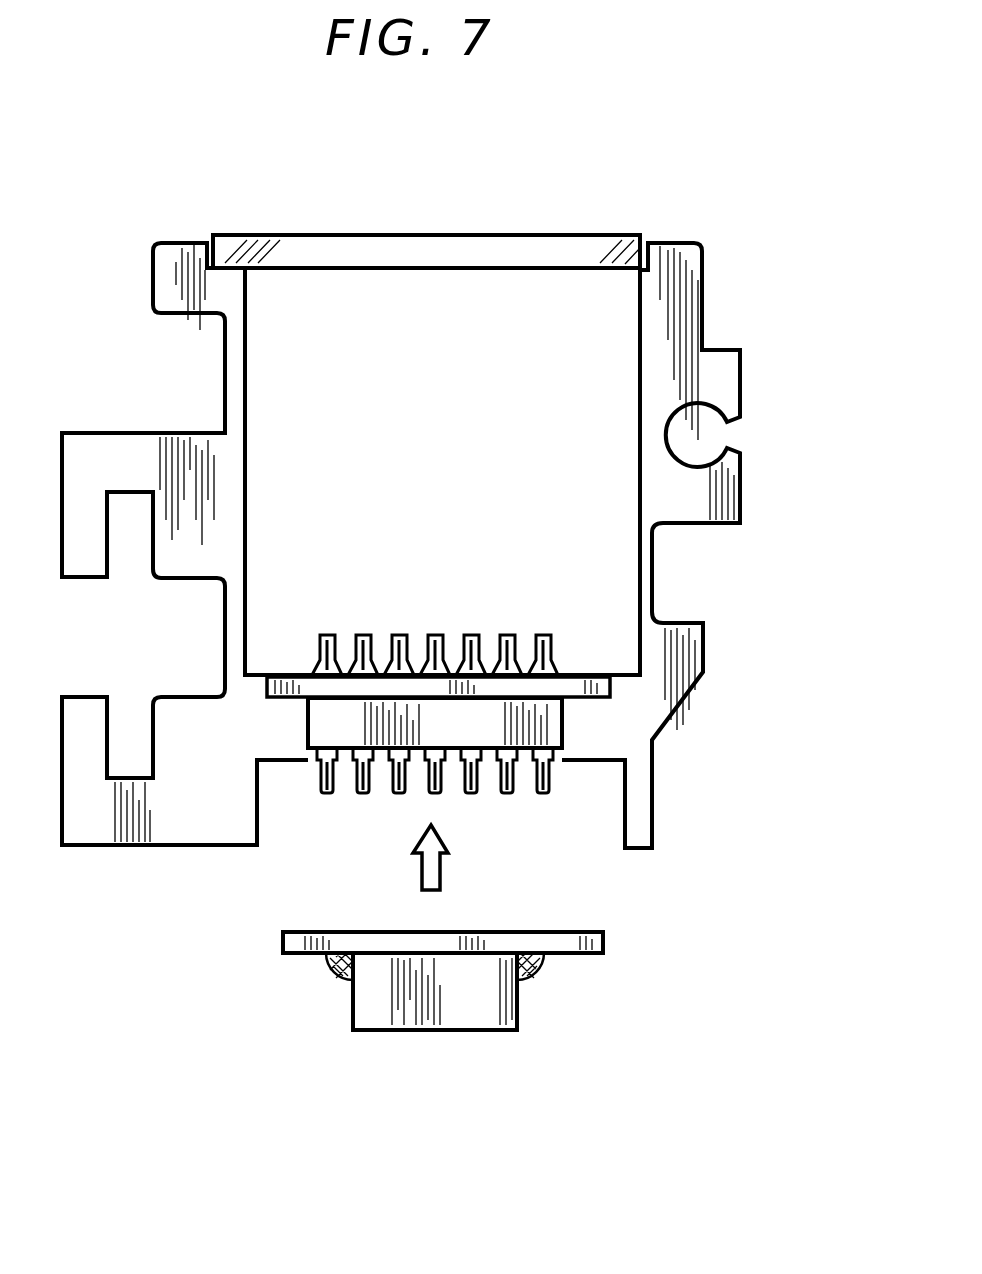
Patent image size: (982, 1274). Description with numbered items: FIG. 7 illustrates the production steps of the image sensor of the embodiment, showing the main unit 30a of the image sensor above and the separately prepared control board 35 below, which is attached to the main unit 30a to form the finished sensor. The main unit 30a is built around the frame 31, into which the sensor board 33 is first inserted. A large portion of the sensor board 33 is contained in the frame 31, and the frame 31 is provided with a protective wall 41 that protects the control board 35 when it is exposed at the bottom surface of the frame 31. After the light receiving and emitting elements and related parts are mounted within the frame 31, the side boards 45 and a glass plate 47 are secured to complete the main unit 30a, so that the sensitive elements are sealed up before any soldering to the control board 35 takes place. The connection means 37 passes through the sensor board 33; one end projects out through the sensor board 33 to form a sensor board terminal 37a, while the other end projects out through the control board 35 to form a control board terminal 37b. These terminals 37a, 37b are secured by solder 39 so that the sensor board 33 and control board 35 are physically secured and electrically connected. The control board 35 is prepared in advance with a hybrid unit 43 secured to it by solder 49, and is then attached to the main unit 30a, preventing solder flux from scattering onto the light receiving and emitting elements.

The main unit 30a is at (451, 537).
The frame 31 is at (120, 455).
The sensor board 33 is at (613, 690).
The control board 35 is at (603, 948).
The connection means 37 is at (421, 708).
The sensor board terminal 37a is at (327, 635).
The control board terminal 37b is at (545, 793).
The solder 39 is at (552, 672).
The protective wall 41 is at (236, 820).
The hybrid unit 43 is at (415, 1030).
The side boards 45 is at (608, 578).
The glass plate 47 is at (425, 258).
The solder 49 is at (542, 972).